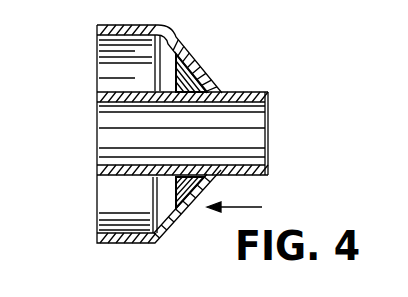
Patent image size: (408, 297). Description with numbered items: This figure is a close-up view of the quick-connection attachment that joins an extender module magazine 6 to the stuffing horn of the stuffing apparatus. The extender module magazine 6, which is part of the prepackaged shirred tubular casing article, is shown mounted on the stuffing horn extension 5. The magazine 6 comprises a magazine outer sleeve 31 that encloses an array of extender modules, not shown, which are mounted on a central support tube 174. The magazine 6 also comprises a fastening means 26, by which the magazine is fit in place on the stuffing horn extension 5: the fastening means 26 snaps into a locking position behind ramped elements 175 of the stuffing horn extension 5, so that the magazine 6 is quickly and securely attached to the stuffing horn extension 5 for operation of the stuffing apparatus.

The stuffing horn extension 5 is at (249, 173).
The extender module magazine 6 is at (248, 210).
The fastening means 26 is at (208, 80).
The magazine outer sleeve 31 is at (113, 238).
The central support tube 174 is at (112, 178).
The ramped elements 175 is at (217, 92).